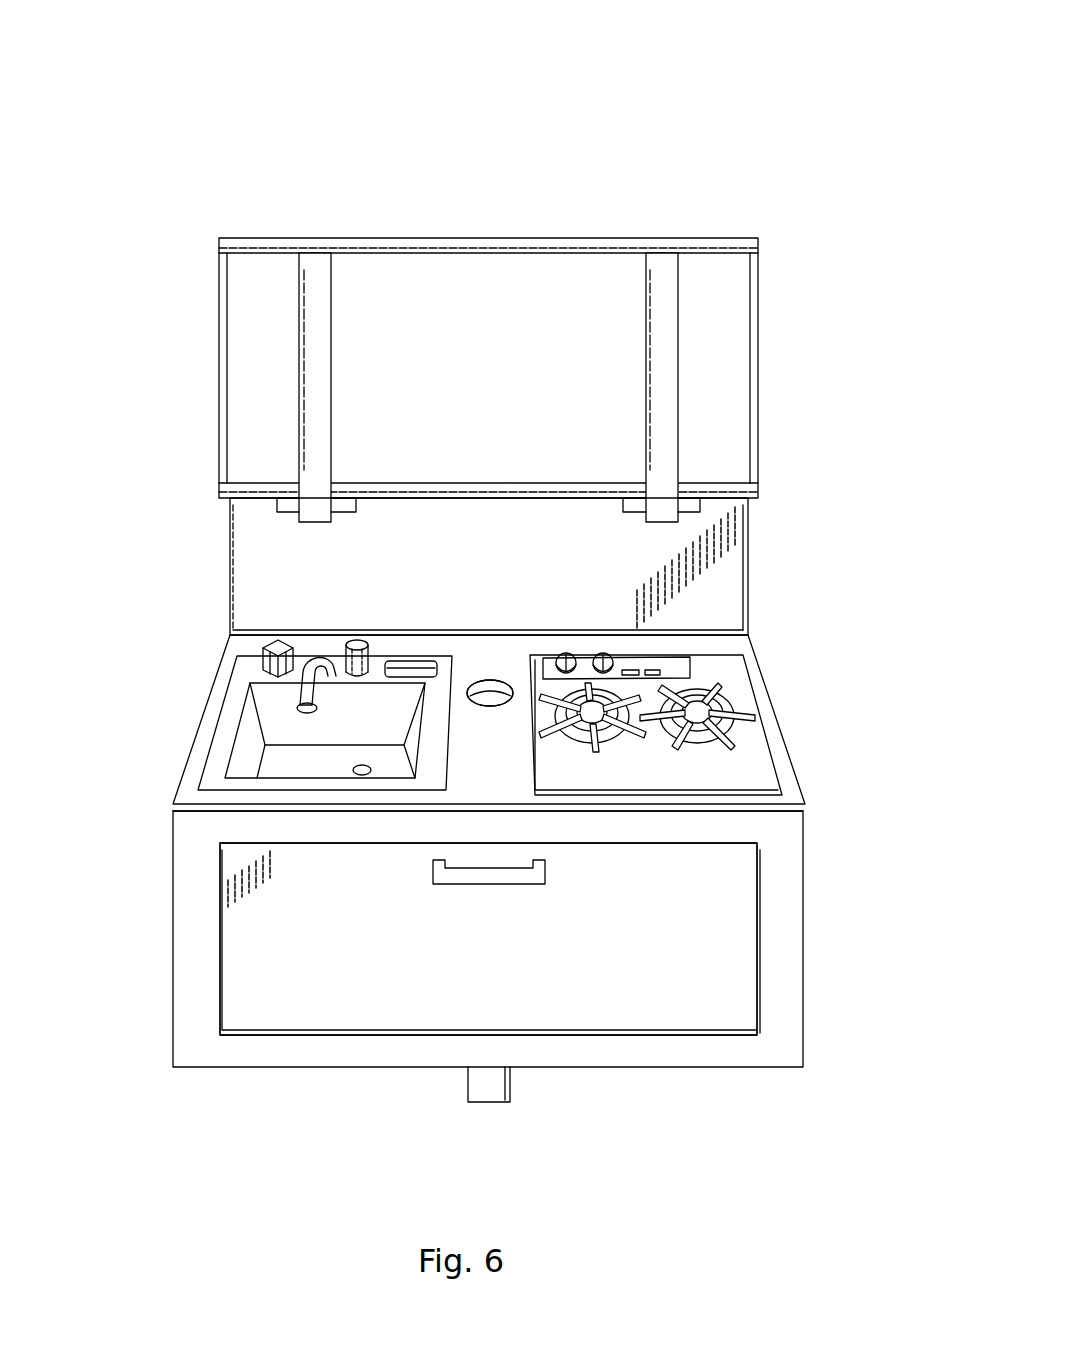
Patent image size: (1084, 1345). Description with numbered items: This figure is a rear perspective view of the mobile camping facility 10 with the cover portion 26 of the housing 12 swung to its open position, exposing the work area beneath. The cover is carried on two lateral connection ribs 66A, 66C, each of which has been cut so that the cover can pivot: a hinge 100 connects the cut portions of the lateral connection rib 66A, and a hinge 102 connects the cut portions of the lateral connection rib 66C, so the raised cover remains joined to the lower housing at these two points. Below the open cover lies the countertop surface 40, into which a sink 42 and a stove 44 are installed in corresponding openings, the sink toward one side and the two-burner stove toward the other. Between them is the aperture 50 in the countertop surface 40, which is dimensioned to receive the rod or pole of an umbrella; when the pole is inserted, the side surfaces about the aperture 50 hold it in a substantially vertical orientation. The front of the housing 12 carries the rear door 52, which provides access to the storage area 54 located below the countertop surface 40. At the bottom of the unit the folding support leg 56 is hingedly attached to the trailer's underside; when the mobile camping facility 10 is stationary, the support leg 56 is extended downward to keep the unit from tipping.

The mobile camping facility 10 is at (443, 86).
The housing 12 is at (445, 140).
The cover portion 26 is at (545, 238).
The lateral connection rib 66A is at (331, 378).
The lateral connection rib 66C is at (645, 353).
The hinge 100 is at (357, 506).
The hinge 102 is at (628, 513).
The sink 42 is at (226, 726).
The countertop surface 40 is at (508, 669).
The aperture 50 is at (489, 703).
The stove 44 is at (752, 767).
The rear door 52 is at (733, 916).
The storage area 54 is at (718, 1003).
The folding support leg 56 is at (505, 1085).